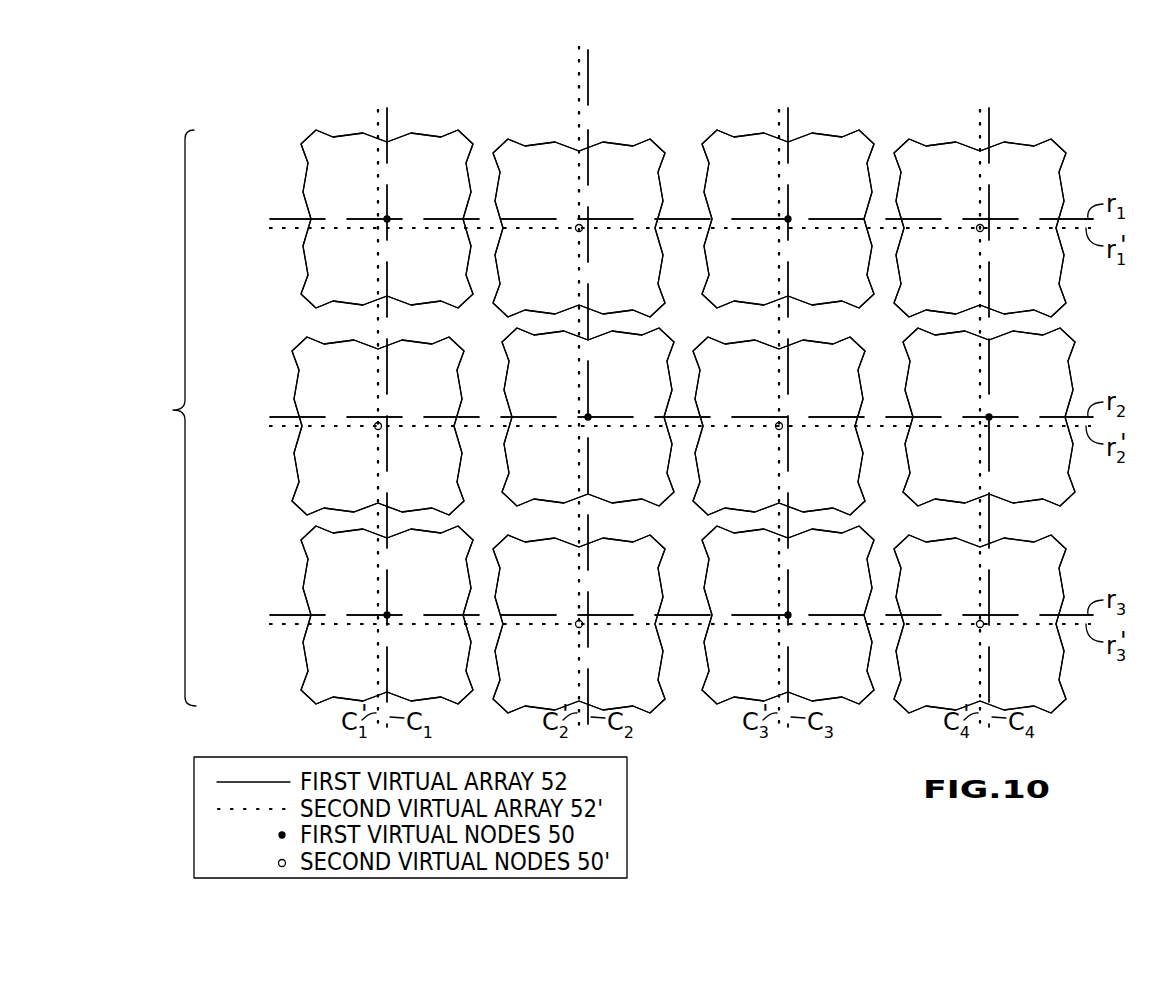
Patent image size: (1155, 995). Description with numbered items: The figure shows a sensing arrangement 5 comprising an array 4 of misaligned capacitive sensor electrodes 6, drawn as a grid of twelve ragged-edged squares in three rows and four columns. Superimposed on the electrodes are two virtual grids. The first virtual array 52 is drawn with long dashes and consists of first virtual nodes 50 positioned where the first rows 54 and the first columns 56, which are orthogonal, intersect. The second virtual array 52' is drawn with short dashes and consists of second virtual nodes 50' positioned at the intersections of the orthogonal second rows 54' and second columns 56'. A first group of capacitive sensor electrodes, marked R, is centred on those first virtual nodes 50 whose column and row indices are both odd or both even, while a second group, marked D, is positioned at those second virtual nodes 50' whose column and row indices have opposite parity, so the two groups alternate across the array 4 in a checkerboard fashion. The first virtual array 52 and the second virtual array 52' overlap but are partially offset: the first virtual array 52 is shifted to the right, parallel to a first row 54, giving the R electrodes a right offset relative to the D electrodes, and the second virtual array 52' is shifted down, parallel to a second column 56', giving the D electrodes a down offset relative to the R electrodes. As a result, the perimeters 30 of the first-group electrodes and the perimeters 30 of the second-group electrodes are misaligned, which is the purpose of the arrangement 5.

The array 4 is at (218, 112).
The sensing arrangement 5 is at (1101, 117).
The capacitive sensor electrodes 6 is at (340, 173).
The perimeters 30 is at (299, 143).
The first virtual nodes 50 is at (673, 402).
The second virtual nodes 50' is at (654, 422).
The first virtual array 52 is at (681, 374).
The second virtual array 52' is at (680, 375).
The first rows 54 is at (654, 400).
The second rows 54' is at (647, 443).
The first columns 56 is at (705, 388).
The second columns 56' is at (658, 388).